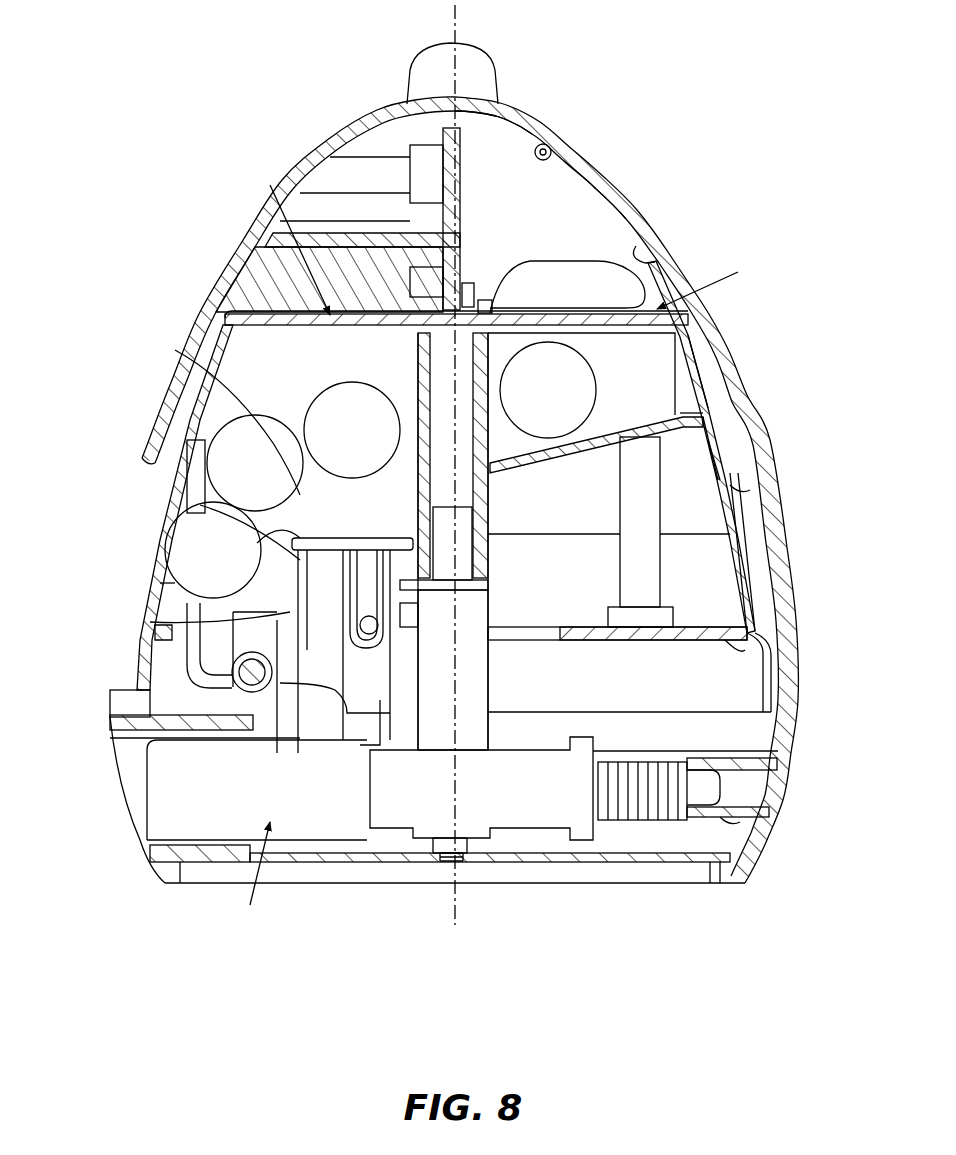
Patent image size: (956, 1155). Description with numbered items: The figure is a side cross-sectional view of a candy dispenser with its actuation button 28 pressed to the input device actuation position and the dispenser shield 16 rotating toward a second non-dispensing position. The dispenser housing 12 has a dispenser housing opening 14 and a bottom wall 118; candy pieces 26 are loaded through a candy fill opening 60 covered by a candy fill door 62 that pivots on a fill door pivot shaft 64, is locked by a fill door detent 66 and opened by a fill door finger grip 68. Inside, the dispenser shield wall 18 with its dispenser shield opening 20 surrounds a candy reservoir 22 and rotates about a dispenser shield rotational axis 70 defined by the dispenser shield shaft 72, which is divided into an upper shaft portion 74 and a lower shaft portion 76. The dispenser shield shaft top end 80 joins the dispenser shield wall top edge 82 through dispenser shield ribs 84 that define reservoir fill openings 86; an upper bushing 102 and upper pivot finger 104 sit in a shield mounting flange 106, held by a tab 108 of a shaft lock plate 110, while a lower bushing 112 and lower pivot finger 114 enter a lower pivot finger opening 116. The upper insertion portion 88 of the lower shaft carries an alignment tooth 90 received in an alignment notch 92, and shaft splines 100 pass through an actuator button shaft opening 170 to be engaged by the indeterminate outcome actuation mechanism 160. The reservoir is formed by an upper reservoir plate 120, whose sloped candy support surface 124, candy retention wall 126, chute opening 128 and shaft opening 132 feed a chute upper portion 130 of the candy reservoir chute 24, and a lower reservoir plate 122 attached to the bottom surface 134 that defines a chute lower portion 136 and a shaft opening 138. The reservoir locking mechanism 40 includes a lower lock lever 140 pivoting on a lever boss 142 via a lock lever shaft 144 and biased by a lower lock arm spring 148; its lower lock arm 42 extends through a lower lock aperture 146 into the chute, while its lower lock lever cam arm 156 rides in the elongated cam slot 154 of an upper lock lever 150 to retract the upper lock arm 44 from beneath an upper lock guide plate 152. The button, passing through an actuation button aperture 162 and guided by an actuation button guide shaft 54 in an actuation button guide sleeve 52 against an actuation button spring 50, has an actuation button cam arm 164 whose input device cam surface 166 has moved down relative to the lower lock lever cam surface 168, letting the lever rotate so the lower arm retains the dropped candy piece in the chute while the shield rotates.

The dispenser housing 12 is at (388, 117).
The dispenser housing opening 14 is at (140, 465).
The dispenser shield 16 is at (207, 312).
The dispenser shield wall 18 is at (717, 423).
The dispenser shield opening 20 is at (743, 490).
The candy reservoir 22 is at (717, 587).
The candy reservoir chute 24 is at (257, 543).
The candy piece 26 is at (380, 470).
The actuation button 28 is at (160, 793).
The reservoir locking mechanism 40 is at (165, 710).
The lower lock arm 42 is at (150, 622).
The upper lock arm 44 is at (295, 560).
The actuation button spring 50 is at (673, 790).
The actuation button guide sleeve 52 is at (733, 827).
The actuation button guide shaft 54 is at (697, 777).
The candy fill opening 60 is at (500, 120).
The candy fill door 62 is at (598, 176).
The fill door pivot shaft 64 is at (552, 147).
The fill door detent 66 is at (652, 236).
The fill door finger grip 68 is at (664, 282).
The dispenser shield rotational axis 70 is at (458, 22).
The dispenser shield shaft 72 is at (497, 563).
The upper shaft portion 74 is at (488, 485).
The lower shaft portion 76 is at (490, 678).
The dispenser shield shaft top end 80 is at (428, 318).
The dispenser shield wall top edge 82 is at (240, 300).
The dispenser shield ribs 84 is at (275, 290).
The reservoir fill openings 86 is at (505, 238).
The upper insertion portion 88 is at (500, 518).
The alignment tooth 90 is at (488, 573).
The alignment notch 92 is at (488, 545).
The shaft splines 100 is at (437, 660).
The upper bushing 102 is at (508, 303).
The upper pivot finger 104 is at (470, 287).
The shield mounting flange 106 is at (440, 215).
The tab 108 is at (493, 318).
The shaft lock plate 110 is at (420, 233).
The lower bushing 112 is at (467, 840).
The lower pivot finger 114 is at (458, 860).
The lower pivot finger opening 116 is at (445, 860).
The bottom wall 118 is at (707, 862).
The upper reservoir plate 120 is at (705, 450).
The lower reservoir plate 122 is at (730, 650).
The candy support surface 124 is at (683, 413).
The candy retention wall 126 is at (205, 445).
The chute opening 128 is at (219, 414).
The chute upper portion 130 is at (265, 528).
The shaft opening 132 is at (497, 465).
The bottom surface 134 is at (727, 543).
The chute lower portion 136 is at (163, 583).
The shaft opening 138 is at (580, 632).
The lower lock lever 140 is at (273, 688).
The lever boss 142 is at (237, 652).
The lock lever shaft 144 is at (145, 690).
The lower lock aperture 146 is at (167, 627).
The lower lock arm spring 148 is at (223, 690).
The upper lock lever 150 is at (463, 520).
The upper lock guide plate 152 is at (475, 585).
The elongated cam slot 154 is at (420, 607).
The lower lock lever cam arm 156 is at (367, 632).
The indeterminate outcome actuation mechanism 160 is at (247, 876).
The actuation button aperture 162 is at (160, 758).
The actuation button cam arm 164 is at (383, 737).
The input device cam surface 166 is at (425, 700).
The lower lock lever cam surface 168 is at (360, 745).
The actuator button shaft opening 170 is at (473, 747).